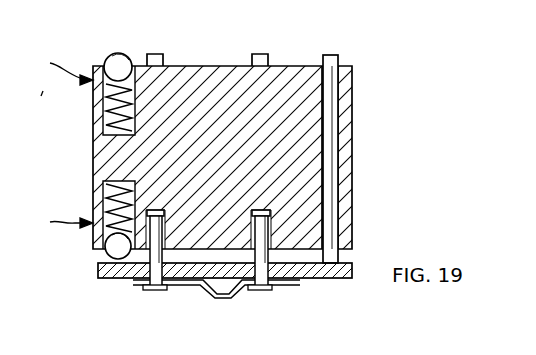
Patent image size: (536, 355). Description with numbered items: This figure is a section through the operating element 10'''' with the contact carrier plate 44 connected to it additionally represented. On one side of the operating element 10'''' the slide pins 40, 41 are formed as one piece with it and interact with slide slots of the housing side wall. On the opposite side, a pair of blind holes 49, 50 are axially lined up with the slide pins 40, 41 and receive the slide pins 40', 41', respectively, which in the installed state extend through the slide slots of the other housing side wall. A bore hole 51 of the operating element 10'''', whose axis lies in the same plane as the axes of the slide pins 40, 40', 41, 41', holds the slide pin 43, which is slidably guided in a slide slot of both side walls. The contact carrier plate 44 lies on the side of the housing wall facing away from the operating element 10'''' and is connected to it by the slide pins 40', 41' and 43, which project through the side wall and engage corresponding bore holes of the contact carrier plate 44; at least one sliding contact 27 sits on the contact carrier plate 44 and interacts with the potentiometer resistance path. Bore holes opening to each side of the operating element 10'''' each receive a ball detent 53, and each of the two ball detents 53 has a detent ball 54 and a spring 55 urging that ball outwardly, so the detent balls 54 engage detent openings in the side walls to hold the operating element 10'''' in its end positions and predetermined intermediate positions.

The operating element 10'''' is at (268, 150).
The slide pin 40 is at (166, 41).
The slide pin 41 is at (249, 41).
The slide pin 43 is at (330, 110).
The bore hole 51 is at (332, 138).
The detent ball 54 is at (112, 63).
The spring 55 is at (110, 118).
The ball detent 53 is at (59, 141).
The contact carrier plate 44 is at (118, 278).
The sliding contact 27 is at (221, 296).
The slide pin 40' is at (152, 269).
The slide pin 41' is at (273, 269).
The blind hole 49 is at (162, 228).
The blind hole 50 is at (290, 238).